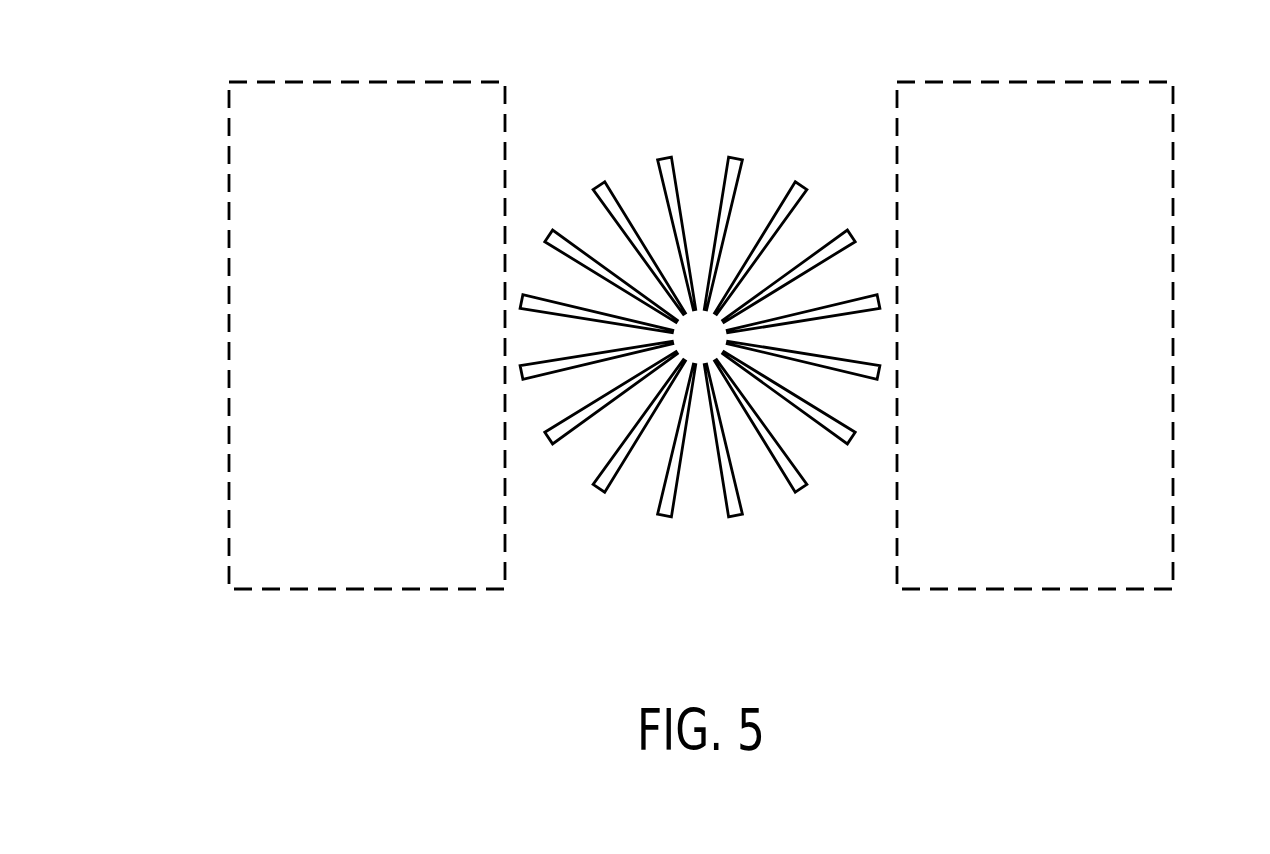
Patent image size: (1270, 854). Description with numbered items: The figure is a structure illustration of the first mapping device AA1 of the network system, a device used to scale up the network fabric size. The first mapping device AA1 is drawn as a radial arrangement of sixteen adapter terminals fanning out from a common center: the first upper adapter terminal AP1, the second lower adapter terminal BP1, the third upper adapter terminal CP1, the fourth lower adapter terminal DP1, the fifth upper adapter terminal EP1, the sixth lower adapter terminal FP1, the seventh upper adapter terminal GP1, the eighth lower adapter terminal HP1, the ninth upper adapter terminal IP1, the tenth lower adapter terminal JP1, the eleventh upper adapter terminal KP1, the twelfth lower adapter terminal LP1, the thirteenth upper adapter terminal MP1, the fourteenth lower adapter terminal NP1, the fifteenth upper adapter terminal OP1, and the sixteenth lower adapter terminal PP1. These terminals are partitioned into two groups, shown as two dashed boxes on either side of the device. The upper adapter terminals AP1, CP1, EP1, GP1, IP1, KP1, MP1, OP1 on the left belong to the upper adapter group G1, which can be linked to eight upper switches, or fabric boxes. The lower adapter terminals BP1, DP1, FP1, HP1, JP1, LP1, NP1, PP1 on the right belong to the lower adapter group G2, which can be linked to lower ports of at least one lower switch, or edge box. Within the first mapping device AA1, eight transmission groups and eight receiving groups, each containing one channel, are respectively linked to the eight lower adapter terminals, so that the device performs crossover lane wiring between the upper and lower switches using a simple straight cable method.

The first mapping device AA1 is at (728, 190).
The upper adapter group G1 is at (229, 323).
The lower adapter group G2 is at (1173, 323).
The first upper adapter terminal AP1 is at (664, 157).
The second lower adapter terminal BP1 is at (740, 157).
The third upper adapter terminal CP1 is at (598, 184).
The fourth lower adapter terminal DP1 is at (801, 184).
The fifth upper adapter terminal EP1 is at (548, 237).
The sixth lower adapter terminal FP1 is at (851, 236).
The seventh upper adapter terminal GP1 is at (522, 302).
The eighth lower adapter terminal HP1 is at (879, 301).
The ninth upper adapter terminal IP1 is at (521, 372).
The tenth lower adapter terminal JP1 is at (879, 373).
The eleventh upper adapter terminal KP1 is at (549, 438).
The twelfth lower adapter terminal LP1 is at (852, 440).
The thirteenth upper adapter terminal MP1 is at (600, 484).
The fourteenth lower adapter terminal NP1 is at (802, 488).
The fifteenth upper adapter terminal OP1 is at (665, 515).
The sixteenth lower adapter terminal PP1 is at (738, 516).